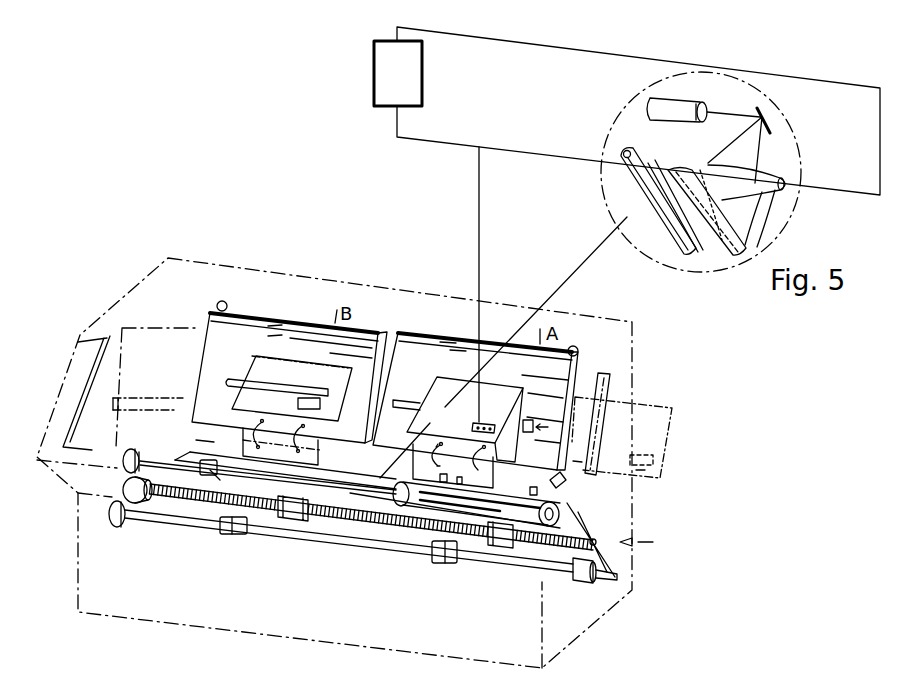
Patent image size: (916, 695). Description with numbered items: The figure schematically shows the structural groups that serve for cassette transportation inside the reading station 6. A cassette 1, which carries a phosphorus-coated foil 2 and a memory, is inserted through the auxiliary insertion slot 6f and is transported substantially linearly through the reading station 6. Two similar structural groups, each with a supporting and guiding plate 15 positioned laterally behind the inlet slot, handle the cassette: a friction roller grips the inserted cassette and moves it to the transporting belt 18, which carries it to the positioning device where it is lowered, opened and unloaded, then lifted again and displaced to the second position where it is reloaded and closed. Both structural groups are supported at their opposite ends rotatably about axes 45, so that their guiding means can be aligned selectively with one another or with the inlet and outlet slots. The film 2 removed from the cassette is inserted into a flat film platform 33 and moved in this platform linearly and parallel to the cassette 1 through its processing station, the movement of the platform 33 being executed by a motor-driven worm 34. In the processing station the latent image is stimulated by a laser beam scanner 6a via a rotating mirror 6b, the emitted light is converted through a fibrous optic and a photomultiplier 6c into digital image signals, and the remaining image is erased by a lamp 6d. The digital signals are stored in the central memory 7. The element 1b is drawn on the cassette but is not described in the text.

The central memory 7 is at (374, 88).
The reading station 6 is at (628, 346).
The laser beam scanner 6a is at (688, 100).
The rotating mirror 6b is at (772, 118).
The photomultiplier 6c is at (742, 262).
The lamp 6d is at (645, 186).
The insertion slot 6f is at (612, 382).
The axes 45 is at (228, 306).
The supporting and guiding plate 15 is at (290, 326).
The transporting belt 18 is at (140, 402).
The cassette 1 is at (527, 402).
The side connector 1b is at (512, 461).
The phosphorus-coated foil 2 is at (490, 467).
The flat film platform 33 is at (580, 516).
The motor-driven worm 34 is at (337, 515).